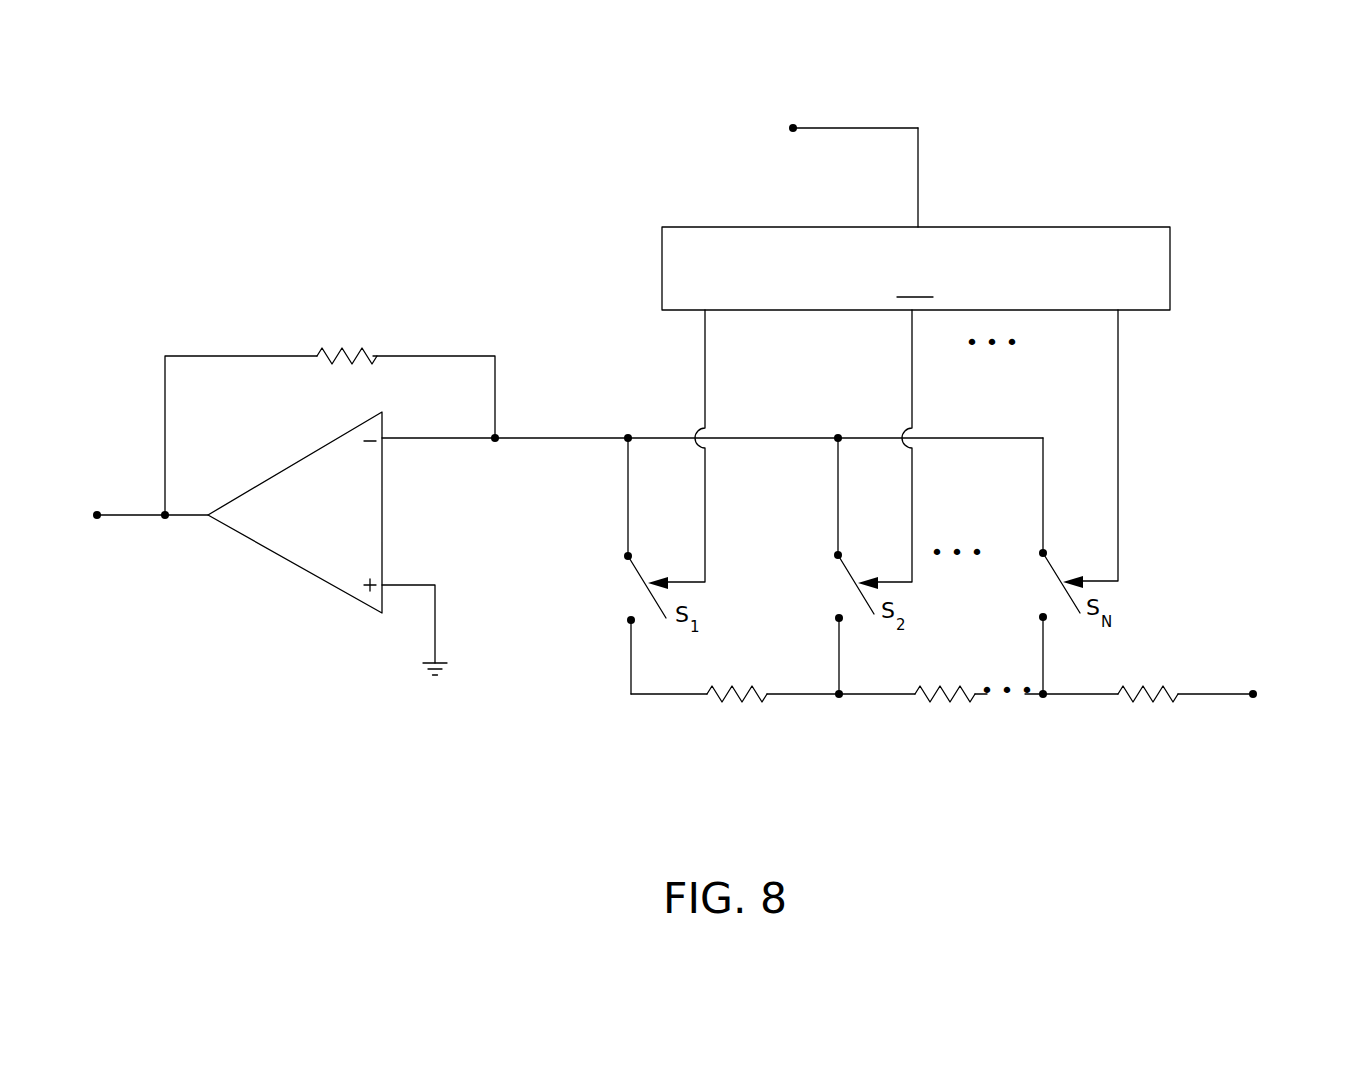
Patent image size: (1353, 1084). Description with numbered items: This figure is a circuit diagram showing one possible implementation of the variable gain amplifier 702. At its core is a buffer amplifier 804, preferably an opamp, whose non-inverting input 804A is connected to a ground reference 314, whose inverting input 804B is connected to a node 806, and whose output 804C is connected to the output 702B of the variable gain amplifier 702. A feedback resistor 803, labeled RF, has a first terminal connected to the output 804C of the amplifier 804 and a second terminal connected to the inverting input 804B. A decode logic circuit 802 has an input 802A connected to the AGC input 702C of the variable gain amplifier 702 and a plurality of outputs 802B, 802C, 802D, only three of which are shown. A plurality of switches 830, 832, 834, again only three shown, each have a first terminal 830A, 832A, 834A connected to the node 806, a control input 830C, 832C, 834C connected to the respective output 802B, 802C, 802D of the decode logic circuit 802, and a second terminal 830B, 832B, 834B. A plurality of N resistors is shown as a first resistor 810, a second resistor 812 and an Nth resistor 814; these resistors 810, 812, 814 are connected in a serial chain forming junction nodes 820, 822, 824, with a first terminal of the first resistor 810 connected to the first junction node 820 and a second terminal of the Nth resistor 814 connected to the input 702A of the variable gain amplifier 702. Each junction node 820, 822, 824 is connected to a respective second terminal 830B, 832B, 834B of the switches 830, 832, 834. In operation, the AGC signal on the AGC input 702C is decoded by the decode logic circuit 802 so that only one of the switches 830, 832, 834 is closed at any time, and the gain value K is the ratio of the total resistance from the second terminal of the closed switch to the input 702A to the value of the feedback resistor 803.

The variable gain amplifier 702 is at (333, 160).
The input of the variable gain amplifier 702A is at (1257, 693).
The output of the variable gain amplifier 702B is at (92, 510).
The AGC input 702C is at (792, 131).
The decode logic circuit 802 is at (916, 268).
The input of the decode logic circuit 802A is at (917, 226).
The output of the decode logic circuit 802B is at (702, 312).
The output of the decode logic circuit 802C is at (908, 312).
The output of the decode logic circuit 802D is at (1115, 312).
The feedback resistor 803 is at (337, 344).
The buffer amplifier 804 is at (290, 460).
The non-inverting input 804A is at (383, 585).
The inverting input 804B is at (383, 442).
The output of the amplifier 804C is at (203, 512).
The node 806 is at (497, 436).
The ground reference 314 is at (437, 642).
The first resistor 810 is at (722, 703).
The second resistor 812 is at (928, 705).
The Nth resistor 814 is at (1135, 705).
The first junction node 820 is at (633, 697).
The junction node 822 is at (842, 698).
The junction node 824 is at (1047, 698).
The switch 830 is at (625, 587).
The first terminal 830A is at (625, 555).
The second terminal 830B is at (628, 620).
The control input 830C is at (690, 582).
The switch 832 is at (833, 584).
The first terminal 832A is at (835, 554).
The second terminal 832B is at (837, 620).
The control input 832C is at (899, 582).
The switch 834 is at (1038, 583).
The first terminal 834A is at (1040, 552).
The second terminal 834B is at (1041, 618).
The control input 834C is at (1100, 580).